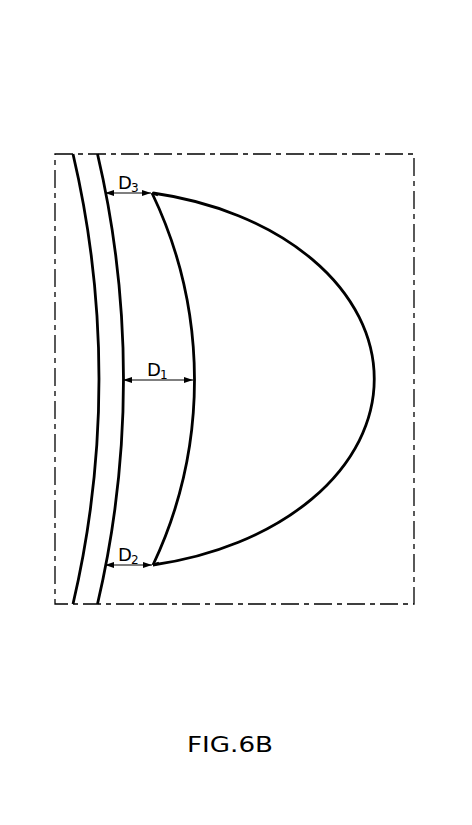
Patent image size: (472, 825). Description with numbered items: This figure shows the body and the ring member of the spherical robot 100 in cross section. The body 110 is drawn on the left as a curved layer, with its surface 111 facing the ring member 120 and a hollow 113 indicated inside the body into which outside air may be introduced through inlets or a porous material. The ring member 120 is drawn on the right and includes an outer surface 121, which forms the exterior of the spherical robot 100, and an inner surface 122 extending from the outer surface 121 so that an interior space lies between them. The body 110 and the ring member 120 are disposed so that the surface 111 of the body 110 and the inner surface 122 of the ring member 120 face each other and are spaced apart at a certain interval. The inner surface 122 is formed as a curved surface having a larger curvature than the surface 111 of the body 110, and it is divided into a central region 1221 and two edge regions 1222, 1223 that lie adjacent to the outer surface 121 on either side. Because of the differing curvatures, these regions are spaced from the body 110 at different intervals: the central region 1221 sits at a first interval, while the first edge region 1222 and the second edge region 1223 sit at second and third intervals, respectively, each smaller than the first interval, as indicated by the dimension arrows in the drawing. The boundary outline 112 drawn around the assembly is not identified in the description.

The spherical robot 100 is at (381, 40).
The body 110 is at (116, 399).
The surface of the body 111 is at (98, 586).
The outer surface of lens 112 is at (74, 586).
The hollow 113 is at (81, 384).
The ring member 120 is at (247, 408).
The outer surface 121 is at (293, 515).
The inner surface 122 is at (192, 408).
The central region 1221 is at (193, 328).
The first edge region 1222 is at (153, 566).
The second edge region 1223 is at (153, 193).